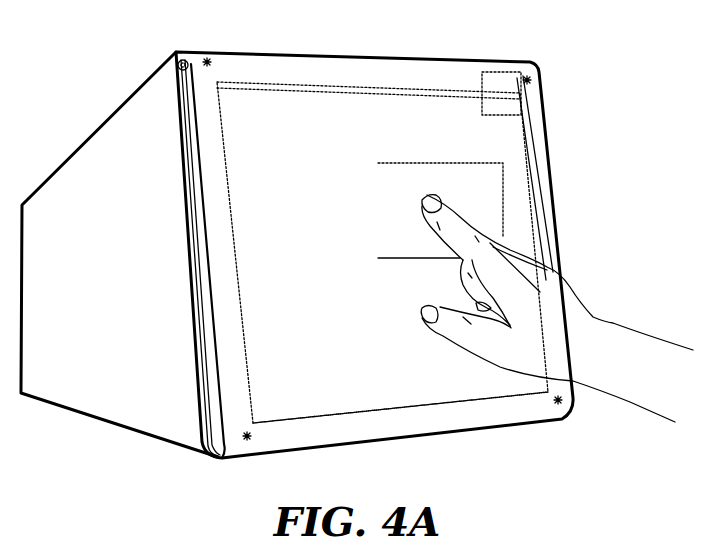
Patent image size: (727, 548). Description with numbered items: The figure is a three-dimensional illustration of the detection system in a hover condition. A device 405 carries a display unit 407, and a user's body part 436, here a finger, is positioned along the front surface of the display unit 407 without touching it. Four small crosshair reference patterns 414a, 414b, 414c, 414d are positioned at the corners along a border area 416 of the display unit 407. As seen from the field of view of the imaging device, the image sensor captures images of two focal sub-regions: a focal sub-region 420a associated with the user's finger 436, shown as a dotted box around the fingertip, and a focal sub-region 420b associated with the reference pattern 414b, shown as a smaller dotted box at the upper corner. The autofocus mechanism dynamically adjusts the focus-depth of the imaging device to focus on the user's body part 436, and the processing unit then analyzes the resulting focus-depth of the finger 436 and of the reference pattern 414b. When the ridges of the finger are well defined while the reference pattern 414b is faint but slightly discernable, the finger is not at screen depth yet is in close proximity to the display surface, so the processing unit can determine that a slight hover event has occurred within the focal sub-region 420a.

The electronic device housing 405 is at (343, 55).
The display unit 407 is at (246, 208).
The reference pattern 414a is at (215, 63).
The reference pattern 414b is at (536, 88).
The reference pattern 414c is at (254, 434).
The reference pattern 414d is at (557, 405).
The border area 416 is at (400, 420).
The focal sub-region 420a is at (378, 247).
The focal sub-region 420b is at (483, 72).
The user's body part 436 is at (568, 281).